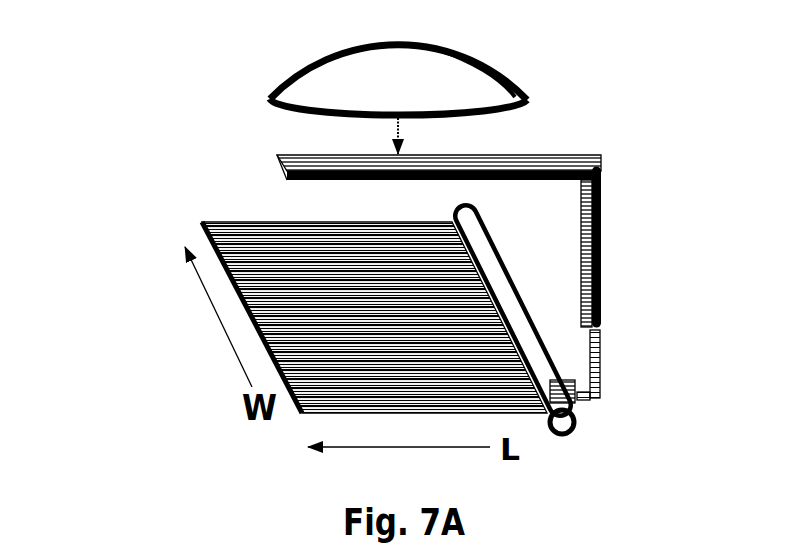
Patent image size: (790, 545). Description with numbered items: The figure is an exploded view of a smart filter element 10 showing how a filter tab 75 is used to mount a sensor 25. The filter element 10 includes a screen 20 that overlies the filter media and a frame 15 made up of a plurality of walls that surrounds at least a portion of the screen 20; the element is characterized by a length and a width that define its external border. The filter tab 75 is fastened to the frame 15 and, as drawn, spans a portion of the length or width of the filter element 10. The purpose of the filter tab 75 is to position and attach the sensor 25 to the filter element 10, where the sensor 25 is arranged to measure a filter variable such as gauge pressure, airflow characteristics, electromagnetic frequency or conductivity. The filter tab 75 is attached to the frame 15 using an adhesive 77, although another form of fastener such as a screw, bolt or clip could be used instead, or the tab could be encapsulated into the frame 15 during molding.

The smart filter element 10 is at (155, 172).
The frame 15 is at (493, 265).
The screen 20 is at (283, 250).
The sensor 25 is at (355, 72).
The filter tab 75 is at (563, 163).
The adhesive 77 is at (582, 285).